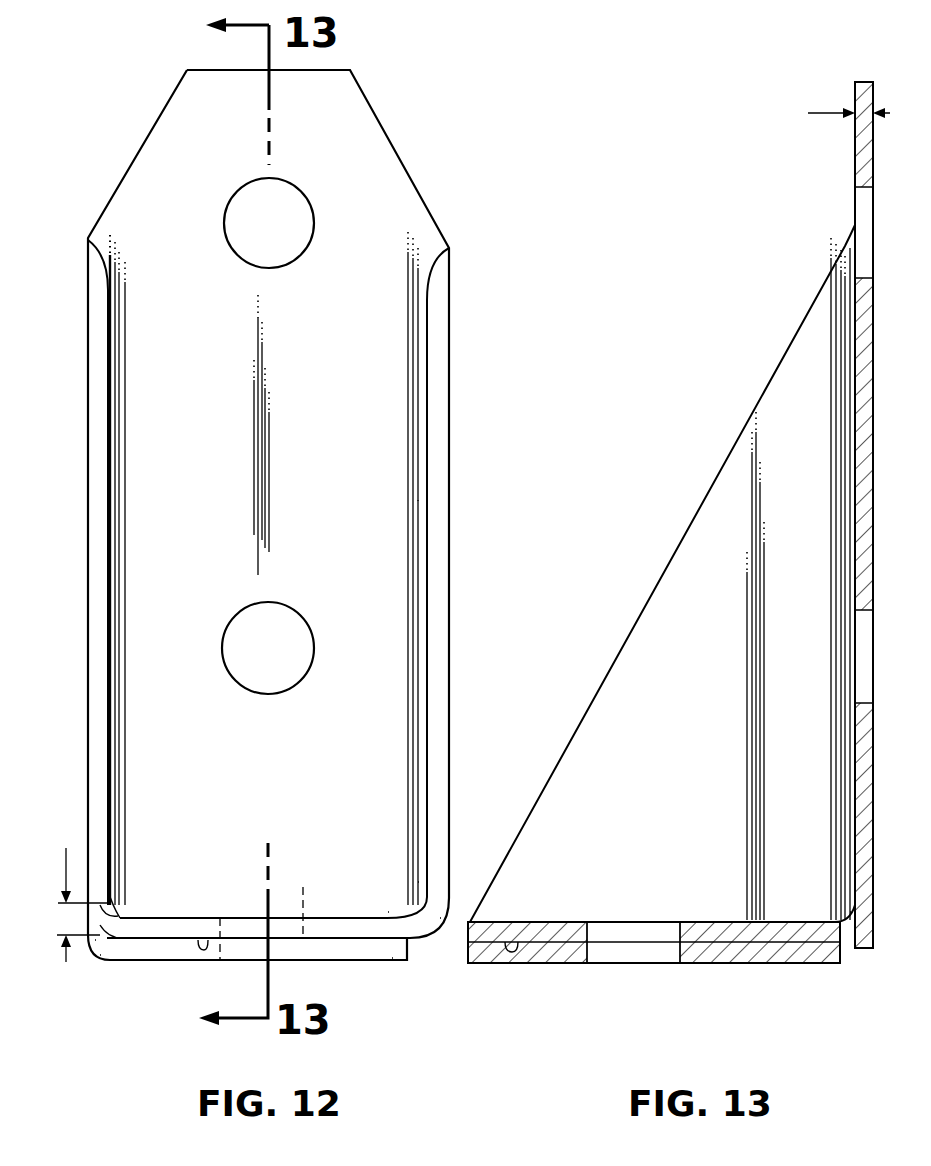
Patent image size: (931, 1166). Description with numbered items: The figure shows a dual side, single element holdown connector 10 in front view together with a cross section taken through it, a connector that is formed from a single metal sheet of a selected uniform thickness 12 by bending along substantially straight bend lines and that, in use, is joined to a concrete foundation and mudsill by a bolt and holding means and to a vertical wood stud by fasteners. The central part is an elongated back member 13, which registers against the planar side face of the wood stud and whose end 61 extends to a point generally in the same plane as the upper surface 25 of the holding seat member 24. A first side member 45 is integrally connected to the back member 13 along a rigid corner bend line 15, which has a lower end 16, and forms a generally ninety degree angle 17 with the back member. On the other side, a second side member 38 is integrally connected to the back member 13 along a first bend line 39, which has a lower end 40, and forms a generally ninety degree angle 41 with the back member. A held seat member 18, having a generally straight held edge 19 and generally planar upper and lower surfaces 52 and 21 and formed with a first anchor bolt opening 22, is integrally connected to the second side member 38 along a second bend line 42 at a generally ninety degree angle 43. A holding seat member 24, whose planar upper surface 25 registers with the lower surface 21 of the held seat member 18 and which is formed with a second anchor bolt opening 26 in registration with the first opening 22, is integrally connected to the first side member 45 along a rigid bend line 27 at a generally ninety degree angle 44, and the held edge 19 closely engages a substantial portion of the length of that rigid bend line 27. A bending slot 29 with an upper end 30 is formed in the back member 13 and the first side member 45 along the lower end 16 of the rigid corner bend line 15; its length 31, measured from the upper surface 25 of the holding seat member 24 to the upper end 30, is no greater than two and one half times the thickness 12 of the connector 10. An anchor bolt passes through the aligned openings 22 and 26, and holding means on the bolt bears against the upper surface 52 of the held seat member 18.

In FIG. 12, the dual side, single element holdown connector 10 is at (139, 148).
In FIG. 13, the dual side, single element holdown connector 10 is at (762, 357).
In FIG. 13, the thickness 12 is at (818, 112).
In FIG. 12, the elongated back member 13 is at (221, 355).
In FIG. 13, the elongated back member 13 is at (855, 137).
In FIG. 12, the rigid corner bend line 15 is at (110, 436).
In FIG. 13, the rigid corner bend line 15 is at (850, 463).
In FIG. 12, the lower end 16 is at (118, 905).
In FIG. 13, the lower end 16 is at (850, 913).
In FIG. 12, the angle 17 is at (110, 618).
In FIG. 12, the held seat member 18 is at (180, 914).
In FIG. 13, the held seat member 18 is at (499, 910).
In FIG. 12, the held edge 19 is at (96, 940).
In FIG. 12, the lower surface 21 is at (204, 942).
In FIG. 13, the lower surface 21 is at (512, 946).
In FIG. 12, the first anchor bolt opening 22 is at (316, 898).
In FIG. 13, the first anchor bolt opening 22 is at (598, 926).
In FIG. 12, the holding seat member 24 is at (364, 968).
In FIG. 13, the holding seat member 24 is at (764, 975).
In FIG. 12, the upper surface 25 is at (393, 958).
In FIG. 13, the upper surface 25 is at (719, 966).
In FIG. 12, the second anchor bolt opening 26 is at (232, 960).
In FIG. 13, the second anchor bolt opening 26 is at (592, 964).
In FIG. 12, the rigid bend line 27 is at (100, 956).
In FIG. 12, the bending slot 29 is at (112, 924).
In FIG. 13, the bending slot 29 is at (830, 923).
In FIG. 12, the upper end 30 is at (100, 921).
In FIG. 13, the upper end 30 is at (838, 920).
In FIG. 12, the length 31 is at (66, 892).
In FIG. 12, the second side member 38 is at (437, 420).
In FIG. 12, the first bend line 39 is at (420, 316).
In FIG. 12, the lower end 40 is at (410, 880).
In FIG. 12, the angle 41 is at (420, 582).
In FIG. 12, the second bend line 42 is at (440, 920).
In FIG. 12, the angle 43 is at (386, 905).
In FIG. 12, the angle 44 is at (118, 892).
In FIG. 12, the first side member 45 is at (100, 345).
In FIG. 13, the first side member 45 is at (712, 642).
In FIG. 12, the upper surface 52 is at (193, 908).
In FIG. 13, the upper surface 52 is at (706, 926).
In FIG. 13, the end 61 is at (856, 950).